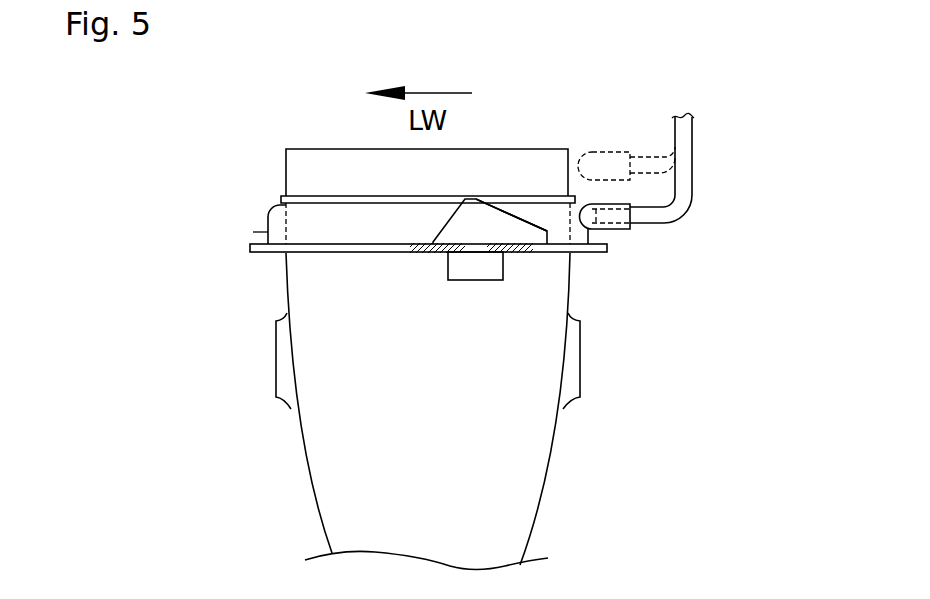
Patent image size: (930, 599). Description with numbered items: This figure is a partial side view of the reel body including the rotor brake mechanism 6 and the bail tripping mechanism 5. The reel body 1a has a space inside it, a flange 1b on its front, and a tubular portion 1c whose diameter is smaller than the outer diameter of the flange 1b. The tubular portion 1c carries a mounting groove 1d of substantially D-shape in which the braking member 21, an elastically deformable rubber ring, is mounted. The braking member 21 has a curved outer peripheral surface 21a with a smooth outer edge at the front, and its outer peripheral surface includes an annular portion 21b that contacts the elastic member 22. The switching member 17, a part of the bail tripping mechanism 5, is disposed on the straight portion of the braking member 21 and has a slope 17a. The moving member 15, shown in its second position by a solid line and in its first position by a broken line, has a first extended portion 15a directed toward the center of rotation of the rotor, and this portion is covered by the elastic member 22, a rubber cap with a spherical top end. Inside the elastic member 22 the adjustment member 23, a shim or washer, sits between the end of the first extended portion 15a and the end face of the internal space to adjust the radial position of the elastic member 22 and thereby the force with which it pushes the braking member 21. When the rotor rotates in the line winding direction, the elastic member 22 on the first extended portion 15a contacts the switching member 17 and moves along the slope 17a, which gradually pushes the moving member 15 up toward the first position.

The reel body 1a is at (300, 423).
The flange 1b is at (250, 252).
The tubular portion 1c is at (286, 160).
The mounting groove 1d is at (572, 230).
The bail tripping mechanism 5 is at (535, 209).
The rotor brake mechanism 6 is at (580, 192).
The moving member 15 is at (703, 200).
The first extended portion 15a is at (644, 224).
The switching member 17 is at (423, 152).
The slope 17a is at (505, 212).
The braking member 21 is at (202, 237).
The curved outer peripheral surface 21a is at (270, 207).
The annular portion 21b is at (268, 232).
The elastic member 22 is at (604, 203).
The adjustment member 23 is at (607, 229).